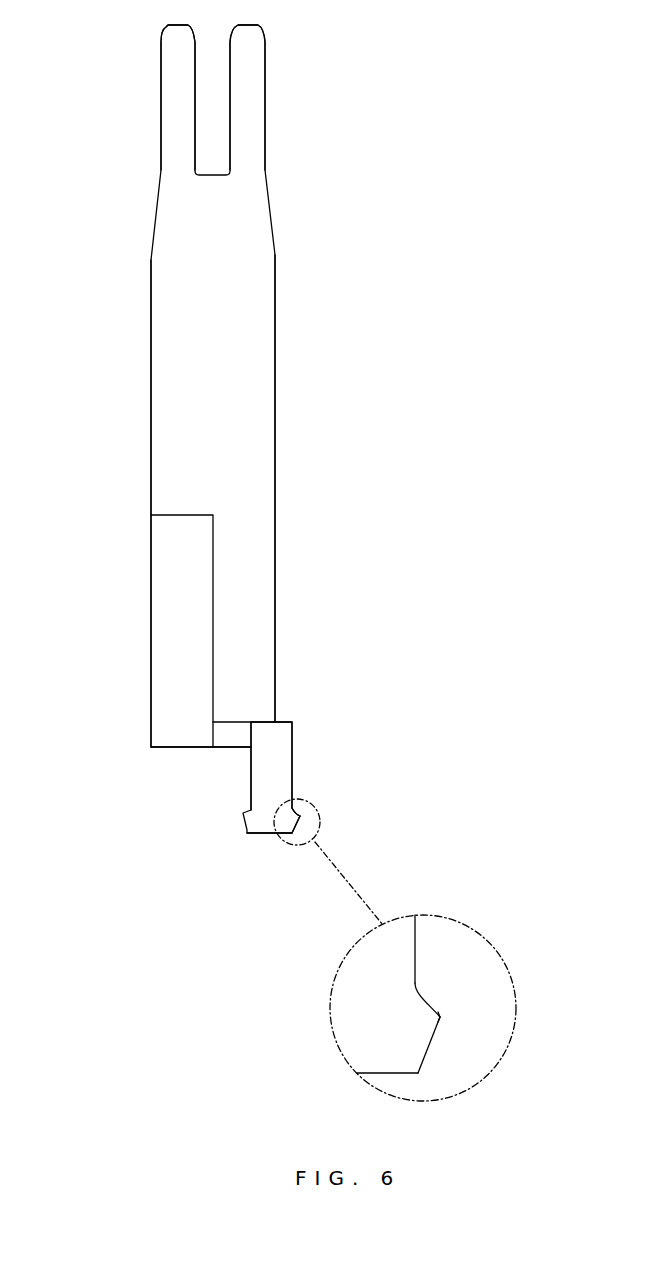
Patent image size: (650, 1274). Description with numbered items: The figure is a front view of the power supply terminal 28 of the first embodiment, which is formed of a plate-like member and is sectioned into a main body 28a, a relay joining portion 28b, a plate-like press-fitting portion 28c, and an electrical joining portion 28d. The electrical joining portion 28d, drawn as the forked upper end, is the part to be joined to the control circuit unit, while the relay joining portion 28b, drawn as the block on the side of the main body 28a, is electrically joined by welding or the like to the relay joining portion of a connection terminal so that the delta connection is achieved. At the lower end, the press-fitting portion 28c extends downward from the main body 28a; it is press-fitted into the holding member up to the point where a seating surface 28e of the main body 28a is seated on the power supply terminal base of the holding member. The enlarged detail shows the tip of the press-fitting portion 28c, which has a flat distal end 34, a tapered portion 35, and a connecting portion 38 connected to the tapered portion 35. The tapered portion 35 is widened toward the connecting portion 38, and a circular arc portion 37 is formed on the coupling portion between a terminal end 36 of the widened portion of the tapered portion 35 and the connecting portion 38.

The power supply terminal 28 is at (267, 163).
The main body 28a is at (192, 457).
The relay joining portion 28b is at (172, 626).
The press-fitting portion 28c is at (280, 773).
The electrical joining portion 28d is at (173, 73).
The seating surface 28e is at (228, 733).
The flat distal end 34 is at (287, 840).
The tapered portion 35 is at (303, 843).
The terminal end 36 is at (318, 826).
The circular arc portion 37 is at (443, 1013).
The connecting portion 38 is at (422, 978).